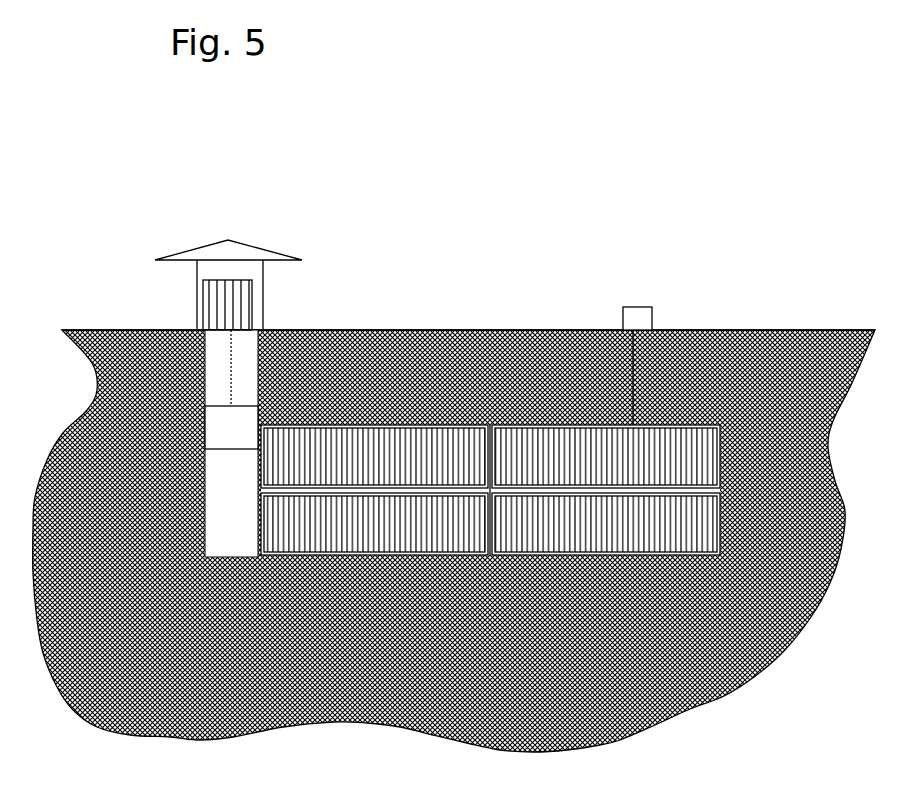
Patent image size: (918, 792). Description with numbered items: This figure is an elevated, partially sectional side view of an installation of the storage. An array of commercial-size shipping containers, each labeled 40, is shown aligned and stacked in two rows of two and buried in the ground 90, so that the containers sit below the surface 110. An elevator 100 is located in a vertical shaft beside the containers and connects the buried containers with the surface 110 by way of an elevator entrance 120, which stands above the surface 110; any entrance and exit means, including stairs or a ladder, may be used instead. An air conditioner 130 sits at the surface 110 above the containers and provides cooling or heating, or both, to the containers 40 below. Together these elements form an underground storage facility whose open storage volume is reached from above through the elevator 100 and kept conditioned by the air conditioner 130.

The right side 40 is at (378, 460).
The ground 90 is at (515, 660).
The elevator 100 is at (225, 452).
The surface 110 is at (757, 330).
The elevator entrance 120 is at (210, 245).
The air conditioner 130 is at (632, 307).